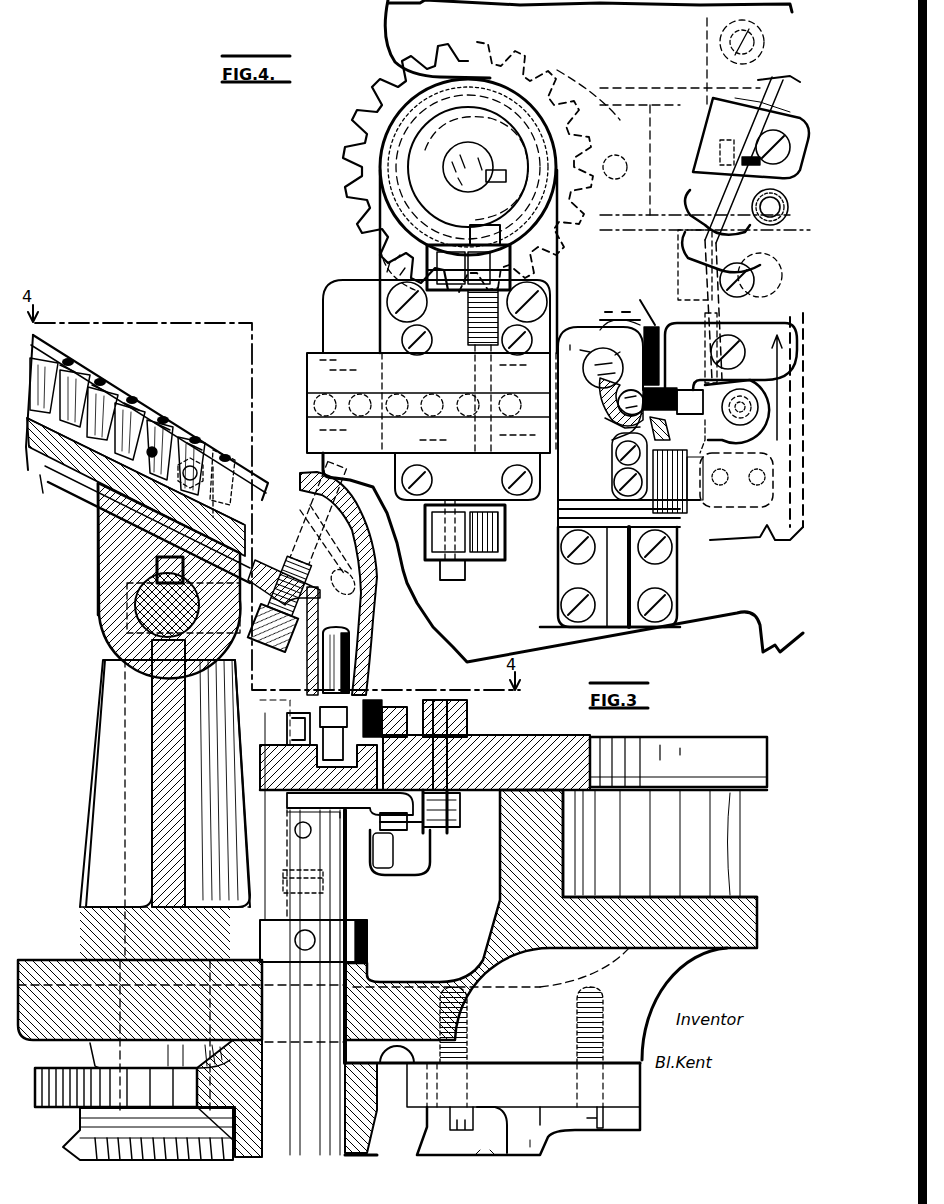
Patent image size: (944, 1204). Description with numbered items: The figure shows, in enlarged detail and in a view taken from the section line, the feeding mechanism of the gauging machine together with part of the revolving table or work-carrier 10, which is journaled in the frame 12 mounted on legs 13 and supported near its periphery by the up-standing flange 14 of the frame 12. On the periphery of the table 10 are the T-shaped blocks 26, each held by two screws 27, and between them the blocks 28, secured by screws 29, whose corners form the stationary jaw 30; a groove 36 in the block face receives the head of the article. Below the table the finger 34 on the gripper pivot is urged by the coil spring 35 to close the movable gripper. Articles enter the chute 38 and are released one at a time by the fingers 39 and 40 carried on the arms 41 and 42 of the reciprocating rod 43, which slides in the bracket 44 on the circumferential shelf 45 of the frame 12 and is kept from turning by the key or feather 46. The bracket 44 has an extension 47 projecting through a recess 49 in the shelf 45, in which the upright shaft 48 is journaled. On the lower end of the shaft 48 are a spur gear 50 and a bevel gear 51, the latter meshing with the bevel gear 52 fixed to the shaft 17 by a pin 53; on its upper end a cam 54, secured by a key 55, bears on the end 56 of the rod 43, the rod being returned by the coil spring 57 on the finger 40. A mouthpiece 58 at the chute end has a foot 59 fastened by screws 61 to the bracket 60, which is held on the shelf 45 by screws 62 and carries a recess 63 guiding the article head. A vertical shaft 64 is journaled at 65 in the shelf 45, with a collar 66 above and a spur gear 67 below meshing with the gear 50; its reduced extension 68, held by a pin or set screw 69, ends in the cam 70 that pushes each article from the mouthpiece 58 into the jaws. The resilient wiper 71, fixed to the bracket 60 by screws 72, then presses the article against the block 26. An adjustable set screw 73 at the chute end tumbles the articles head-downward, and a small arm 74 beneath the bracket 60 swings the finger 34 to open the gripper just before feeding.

In FIG. 4, the revolving table or work-carrier 10 is at (772, 528).
In FIG. 3, the revolving table or work-carrier 10 is at (728, 745).
In FIG. 3, the frame 12 is at (757, 905).
In FIG. 3, the legs 13 is at (492, 1109).
In FIG. 3, the up-standing flange 14 is at (500, 863).
In FIG. 4, the shaft 17 is at (690, 118).
In FIG. 4, the T-shaped blocks 26 is at (695, 398).
In FIG. 3, the T-shaped blocks 26 is at (393, 700).
In FIG. 4, the screws 27 is at (735, 150).
In FIG. 4, the blocks 28 is at (712, 130).
In FIG. 4, the screws 29 is at (773, 140).
In FIG. 4, the stationary jaw or gripper 30 is at (661, 390).
In FIG. 4, the finger 34 is at (735, 452).
In FIG. 3, the finger 34 is at (432, 845).
In FIG. 3, the coil spring 35 is at (462, 812).
In FIG. 3, the groove 36 is at (490, 740).
In FIG. 4, the chute 38 is at (370, 370).
In FIG. 3, the chute 38 is at (222, 450).
In FIG. 4, the finger 39 is at (440, 485).
In FIG. 3, the finger 39 is at (168, 425).
In FIG. 4, the finger 40 is at (483, 372).
In FIG. 3, the finger 40 is at (178, 482).
In FIG. 4, the arm 41 is at (440, 540).
In FIG. 4, the arm 42 is at (399, 254).
In FIG. 3, the arm 42 is at (212, 487).
In FIG. 3, the reciprocating rod 43 is at (135, 605).
In FIG. 3, the bracket 44 is at (103, 638).
In FIG. 4, the circumferential shelf 45 is at (465, 627).
In FIG. 3, the circumferential shelf 45 is at (45, 960).
In FIG. 3, the key or feather 46 is at (157, 568).
In FIG. 4, the extension 47 is at (405, 127).
In FIG. 3, the extension 47 is at (100, 744).
In FIG. 4, the upright shaft 48 is at (455, 165).
In FIG. 3, the upright shaft 48 is at (125, 817).
In FIG. 4, the recess 49 is at (525, 80).
In FIG. 4, the spur gear 50 is at (342, 178).
In FIG. 3, the spur gear 50 is at (68, 1072).
In FIG. 3, the bevel gear 51 is at (78, 1120).
In FIG. 4, the bevel gear 52 is at (567, 80).
In FIG. 4, the pin 53 is at (619, 152).
In FIG. 4, the cam 54 is at (490, 147).
In FIG. 4, the key 55 is at (496, 170).
In FIG. 4, the end of the reciprocating rod 56 is at (470, 235).
In FIG. 4, the coil spring 57 is at (545, 300).
In FIG. 4, the mouthpiece 58 is at (608, 424).
In FIG. 3, the mouthpiece 58 is at (376, 610).
In FIG. 4, the foot 59 is at (616, 455).
In FIG. 4, the bracket 60 is at (560, 500).
In FIG. 3, the bracket 60 is at (270, 745).
In FIG. 4, the screws 61 is at (614, 483).
In FIG. 4, the screws 62 is at (578, 560).
In FIG. 4, the recess 63 is at (627, 294).
In FIG. 3, the recess 63 is at (378, 796).
In FIG. 3, the vertical shaft 64 is at (345, 900).
In FIG. 3, the journal 65 is at (360, 1003).
In FIG. 3, the collar 66 is at (372, 940).
In FIG. 3, the spur gear 67 is at (380, 1110).
In FIG. 4, the extension 68 is at (598, 352).
In FIG. 3, the extension 68 is at (283, 880).
In FIG. 3, the pin or set screw 69 is at (310, 837).
In FIG. 4, the cam 70 is at (600, 395).
In FIG. 3, the cam 70 is at (287, 720).
In FIG. 4, the resilient wiper 71 is at (652, 330).
In FIG. 4, the screws 72 is at (640, 318).
In FIG. 3, the set screw 73 is at (334, 679).
In FIG. 4, the small arm 74 is at (706, 428).
In FIG. 3, the small arm 74 is at (380, 822).